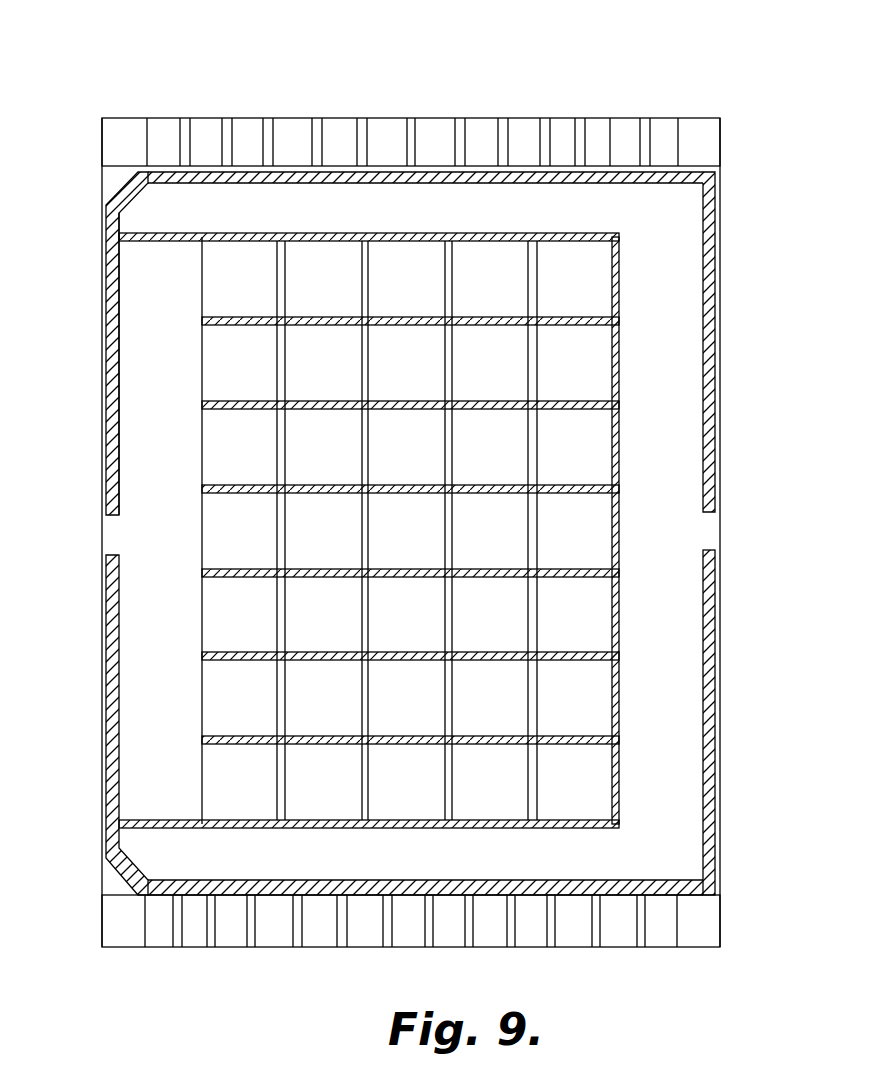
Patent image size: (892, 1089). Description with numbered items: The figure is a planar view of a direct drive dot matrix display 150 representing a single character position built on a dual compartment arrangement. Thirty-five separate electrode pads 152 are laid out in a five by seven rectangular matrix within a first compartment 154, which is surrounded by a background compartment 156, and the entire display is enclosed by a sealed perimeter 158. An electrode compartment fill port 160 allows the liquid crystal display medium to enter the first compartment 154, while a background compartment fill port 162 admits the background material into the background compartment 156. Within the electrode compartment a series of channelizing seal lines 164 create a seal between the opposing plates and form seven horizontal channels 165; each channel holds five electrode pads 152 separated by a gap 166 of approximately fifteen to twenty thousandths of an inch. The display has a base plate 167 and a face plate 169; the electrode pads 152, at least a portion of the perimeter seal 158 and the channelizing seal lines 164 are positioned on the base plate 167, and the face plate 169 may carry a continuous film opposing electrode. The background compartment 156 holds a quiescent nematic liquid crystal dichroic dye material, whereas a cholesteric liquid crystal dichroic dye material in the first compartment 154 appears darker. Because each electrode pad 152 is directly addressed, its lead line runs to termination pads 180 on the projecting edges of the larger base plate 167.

The direct drive dot matrix display 150 is at (149, 63).
The electrode pads 152 is at (237, 258).
The first compartment 154 is at (138, 273).
The background compartment 156 is at (670, 298).
The sealed perimeter 158 is at (112, 425).
The electrode compartment fill port 160 is at (118, 557).
The background compartment fill port 162 is at (705, 554).
The channelizing seal lines 164 is at (556, 232).
The horizontal channels 165 is at (606, 699).
The gap 166 is at (283, 290).
The base plate 167 is at (694, 118).
The face plate 169 is at (697, 167).
The termination pads 180 is at (482, 133).